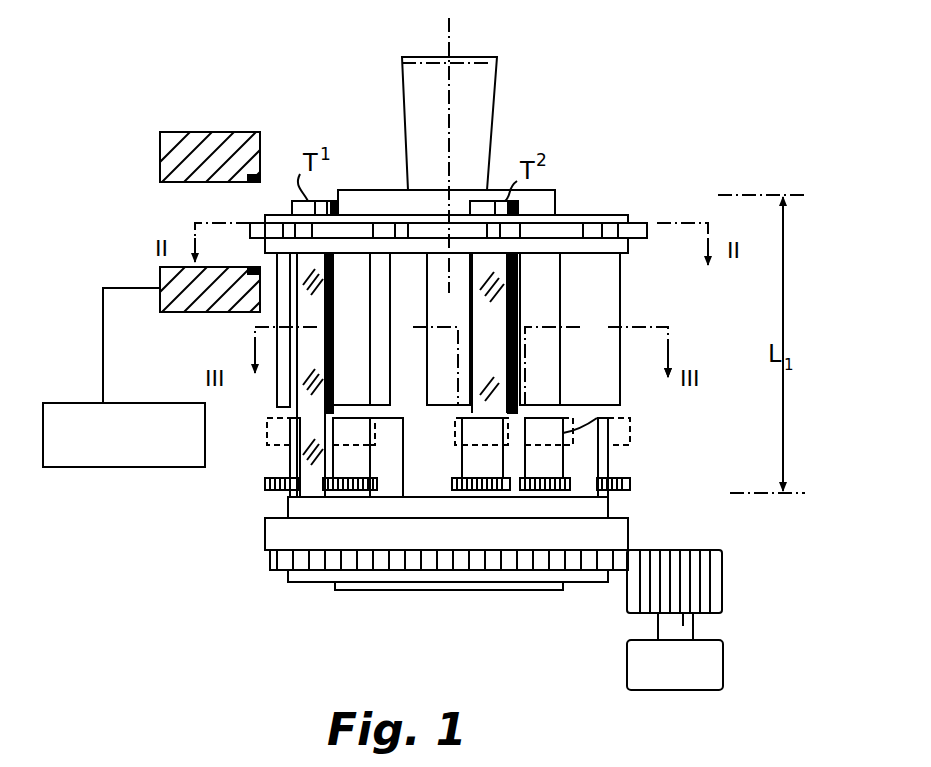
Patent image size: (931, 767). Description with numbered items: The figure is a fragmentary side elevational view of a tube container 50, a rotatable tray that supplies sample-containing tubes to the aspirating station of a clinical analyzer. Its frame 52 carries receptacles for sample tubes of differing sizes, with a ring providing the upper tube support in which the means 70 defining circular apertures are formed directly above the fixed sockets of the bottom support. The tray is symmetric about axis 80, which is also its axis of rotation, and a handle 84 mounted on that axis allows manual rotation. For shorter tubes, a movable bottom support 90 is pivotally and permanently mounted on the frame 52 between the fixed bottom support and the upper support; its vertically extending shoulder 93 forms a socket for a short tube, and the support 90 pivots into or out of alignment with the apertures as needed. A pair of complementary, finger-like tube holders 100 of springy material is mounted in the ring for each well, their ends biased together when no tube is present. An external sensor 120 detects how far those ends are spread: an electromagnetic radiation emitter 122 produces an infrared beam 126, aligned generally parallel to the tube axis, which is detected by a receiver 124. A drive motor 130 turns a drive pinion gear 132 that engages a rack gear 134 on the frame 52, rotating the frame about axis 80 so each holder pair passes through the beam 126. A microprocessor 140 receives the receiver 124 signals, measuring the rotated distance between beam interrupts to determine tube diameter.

The tube container 50 is at (243, 490).
The frame 52 is at (620, 303).
The means defining circular apertures 70 is at (630, 213).
The axis 80 is at (452, 108).
The handle 84 is at (412, 78).
The movable bottom support 90 is at (548, 490).
The vertically extending shoulder 93 is at (270, 433).
The tube holders 100 is at (650, 238).
The external sensor 120 is at (174, 222).
The electromagnetic radiation emitter 122 is at (250, 177).
The receiver 124 is at (250, 272).
The beam 126 is at (255, 188).
The drive motor 130 is at (640, 662).
The drive pinion gear 132 is at (722, 570).
The rack gear 134 is at (312, 571).
The microprocessor 140 is at (86, 468).